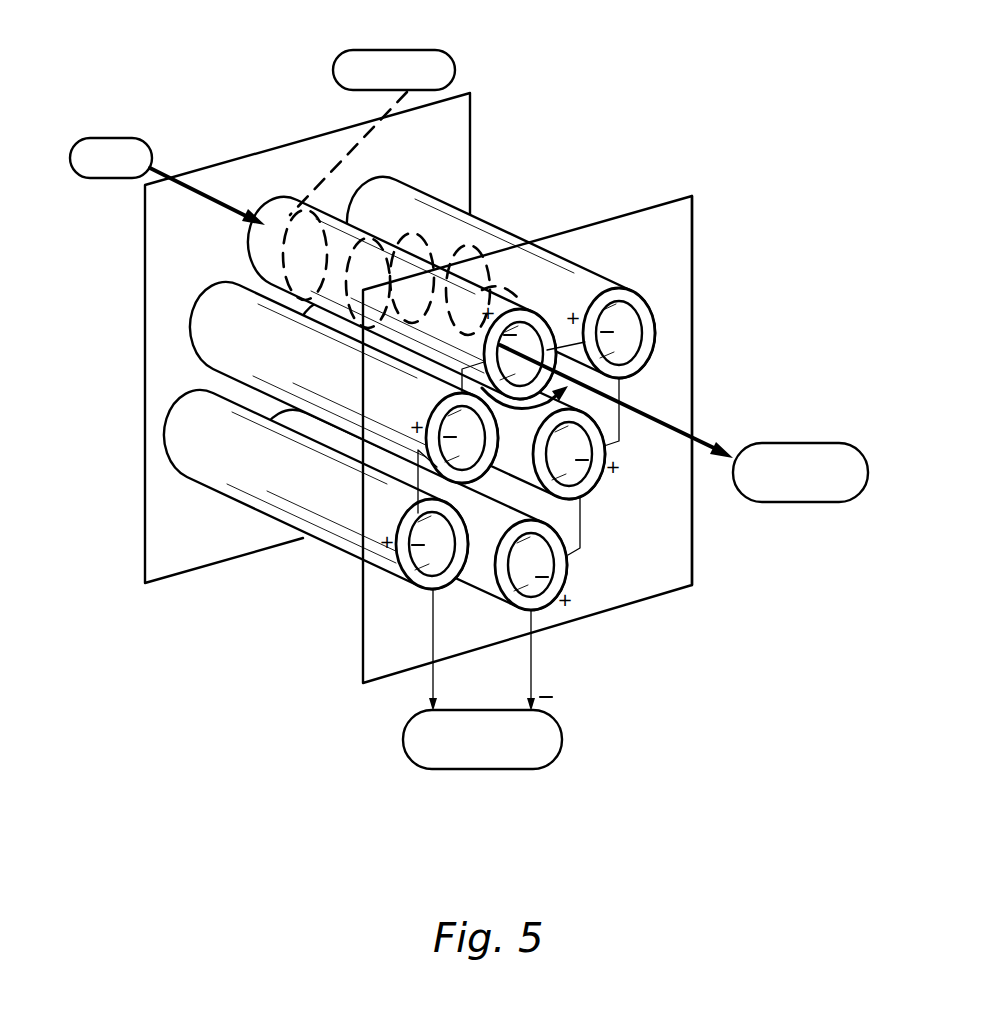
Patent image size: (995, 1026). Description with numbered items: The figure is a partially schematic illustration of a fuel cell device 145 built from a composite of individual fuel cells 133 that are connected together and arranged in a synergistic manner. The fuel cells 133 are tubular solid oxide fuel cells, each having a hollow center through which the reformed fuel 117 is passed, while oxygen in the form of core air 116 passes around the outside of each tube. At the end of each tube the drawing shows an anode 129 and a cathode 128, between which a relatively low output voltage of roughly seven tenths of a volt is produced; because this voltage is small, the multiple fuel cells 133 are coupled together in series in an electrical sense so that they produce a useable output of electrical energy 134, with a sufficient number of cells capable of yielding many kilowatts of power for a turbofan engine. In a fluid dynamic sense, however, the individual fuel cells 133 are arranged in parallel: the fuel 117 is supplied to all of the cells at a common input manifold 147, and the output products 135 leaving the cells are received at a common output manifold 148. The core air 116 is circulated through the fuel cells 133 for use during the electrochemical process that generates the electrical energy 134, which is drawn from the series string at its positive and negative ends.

The core air 116 is at (411, 50).
The fuel 117 is at (100, 139).
The cathode 128 is at (642, 317).
The anode 129 is at (597, 486).
The fuel cell 133 is at (586, 277).
The electrical energy 134 is at (522, 769).
The output products 135 is at (815, 443).
The fuel cell device 145 is at (598, 192).
The input manifold 147 is at (145, 355).
The output manifold 148 is at (692, 543).